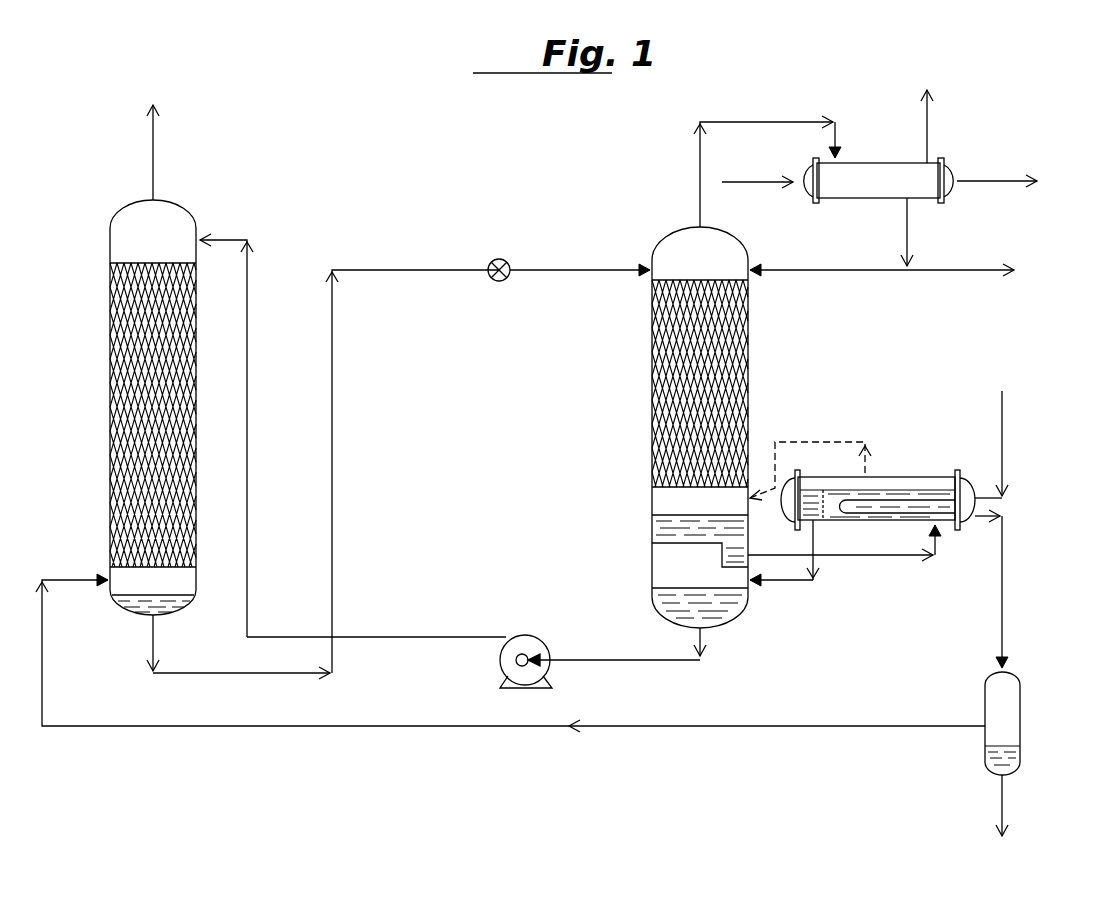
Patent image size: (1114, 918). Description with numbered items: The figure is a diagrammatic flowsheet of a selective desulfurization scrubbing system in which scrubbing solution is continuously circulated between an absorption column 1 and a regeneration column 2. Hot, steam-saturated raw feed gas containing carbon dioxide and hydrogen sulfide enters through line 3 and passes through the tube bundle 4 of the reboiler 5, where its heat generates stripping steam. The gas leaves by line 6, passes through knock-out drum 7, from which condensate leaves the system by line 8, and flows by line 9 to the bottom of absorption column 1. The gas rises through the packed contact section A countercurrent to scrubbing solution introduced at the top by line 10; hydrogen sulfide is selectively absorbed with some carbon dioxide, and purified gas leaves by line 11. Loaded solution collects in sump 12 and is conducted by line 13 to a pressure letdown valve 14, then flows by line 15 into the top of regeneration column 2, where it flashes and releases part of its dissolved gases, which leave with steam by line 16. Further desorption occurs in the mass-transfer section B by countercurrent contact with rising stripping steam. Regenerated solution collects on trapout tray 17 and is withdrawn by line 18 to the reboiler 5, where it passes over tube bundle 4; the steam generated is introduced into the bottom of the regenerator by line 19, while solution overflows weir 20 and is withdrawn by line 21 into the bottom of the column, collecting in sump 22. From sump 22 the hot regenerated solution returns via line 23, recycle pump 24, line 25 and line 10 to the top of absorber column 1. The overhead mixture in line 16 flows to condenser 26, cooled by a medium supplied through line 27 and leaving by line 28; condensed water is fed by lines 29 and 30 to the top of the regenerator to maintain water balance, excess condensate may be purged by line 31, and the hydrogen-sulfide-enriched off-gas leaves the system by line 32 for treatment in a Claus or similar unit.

The absorption column 1 is at (110, 452).
The gas-liquid contact section A is at (152, 372).
The regeneration column 2 is at (652, 370).
The mass-transfer section B is at (735, 360).
The feed gas line 3 is at (1004, 426).
The tube bundle 4 is at (915, 495).
The reboiler 5 is at (892, 456).
The feed gas outlet line 6 is at (1004, 576).
The knock-out drum 7 is at (1022, 713).
The condensate line 8 is at (1004, 802).
The feed gas line to absorber 9 is at (622, 728).
The scrubbing solution inlet line 10 is at (228, 240).
The purified gas line 11 is at (153, 152).
The sump 12 is at (175, 610).
The rich solution line 13 is at (332, 500).
The pressure letdown valve 14 is at (492, 262).
The depressurized solution line 15 is at (572, 268).
The regenerator overhead line 16 is at (700, 180).
The trapout tray 17 is at (690, 543).
The reboiler feed line 18 is at (876, 558).
The steam line 19 is at (838, 442).
The weir 20 is at (823, 490).
The reboiler solution outlet line 21 is at (797, 582).
The regenerator sump 22 is at (735, 605).
The recycle line 23 is at (628, 662).
The recycle pump 24 is at (522, 650).
The pump discharge line 25 is at (410, 634).
The condenser 26 is at (866, 193).
The cooling medium supply line 27 is at (762, 182).
The cooling medium return line 28 is at (1005, 176).
The condensate return line 29 is at (910, 238).
The condensate feed line 30 is at (846, 272).
The condensate purge line 31 is at (966, 272).
The off-gas line 32 is at (927, 130).